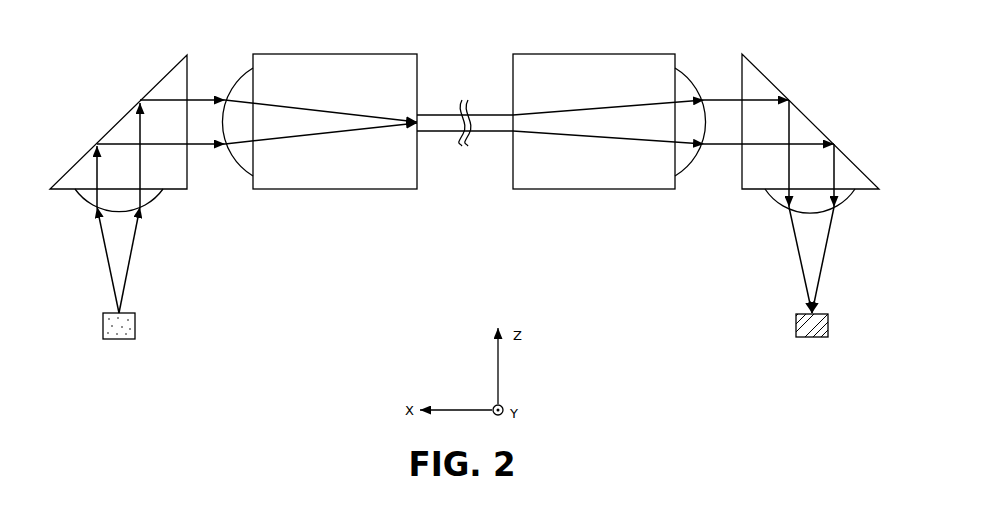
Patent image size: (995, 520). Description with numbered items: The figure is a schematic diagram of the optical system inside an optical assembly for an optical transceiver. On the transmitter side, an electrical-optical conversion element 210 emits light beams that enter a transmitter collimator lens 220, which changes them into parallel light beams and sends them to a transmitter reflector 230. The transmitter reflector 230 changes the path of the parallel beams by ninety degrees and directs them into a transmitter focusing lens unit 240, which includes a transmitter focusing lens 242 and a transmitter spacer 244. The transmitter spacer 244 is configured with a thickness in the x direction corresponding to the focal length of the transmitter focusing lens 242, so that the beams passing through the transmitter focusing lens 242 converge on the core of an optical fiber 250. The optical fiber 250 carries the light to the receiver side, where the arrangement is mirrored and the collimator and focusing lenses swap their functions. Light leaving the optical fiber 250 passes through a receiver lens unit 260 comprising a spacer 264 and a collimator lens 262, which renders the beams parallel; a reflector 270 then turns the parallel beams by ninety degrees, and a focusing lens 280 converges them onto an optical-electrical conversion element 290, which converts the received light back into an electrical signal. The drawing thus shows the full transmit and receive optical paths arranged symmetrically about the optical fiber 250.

The electrical-optical conversion element 210 is at (103, 324).
The transmitter collimator lens 220 is at (78, 196).
The transmitter reflector 230 is at (115, 127).
The transmitter focusing lens unit 240 is at (310, 177).
The transmitter focusing lens 242 is at (234, 176).
The transmitter spacer 244 is at (335, 151).
The optical fiber 250 is at (492, 114).
The receiver lens unit 260 is at (614, 177).
The collimator lens 262 is at (689, 158).
The spacer 264 is at (625, 190).
The reflector 270 is at (813, 126).
The focusing lens 280 is at (853, 200).
The optical-electrical conversion element 290 is at (828, 326).